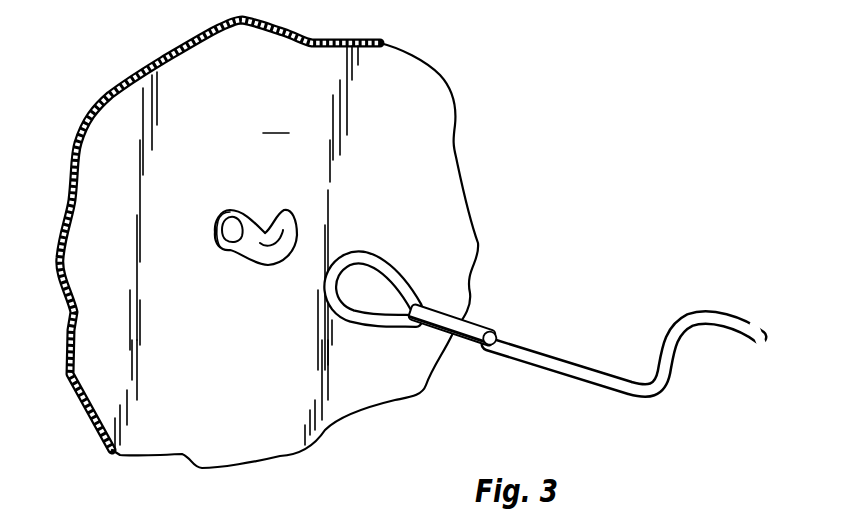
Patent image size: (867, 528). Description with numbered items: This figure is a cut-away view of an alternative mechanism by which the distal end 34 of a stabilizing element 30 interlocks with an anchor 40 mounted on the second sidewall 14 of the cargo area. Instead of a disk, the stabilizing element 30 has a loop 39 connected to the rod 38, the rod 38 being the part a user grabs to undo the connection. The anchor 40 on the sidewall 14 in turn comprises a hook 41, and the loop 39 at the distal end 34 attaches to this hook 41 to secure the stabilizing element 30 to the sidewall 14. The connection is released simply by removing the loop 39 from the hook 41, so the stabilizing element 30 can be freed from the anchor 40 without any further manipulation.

The second sidewall 14 is at (269, 244).
The stabilizing element 30 is at (628, 397).
The distal end 34 is at (525, 331).
The rod 38 is at (453, 312).
The loop 39 is at (385, 262).
The anchor 40 is at (217, 170).
The hook 41 is at (268, 257).